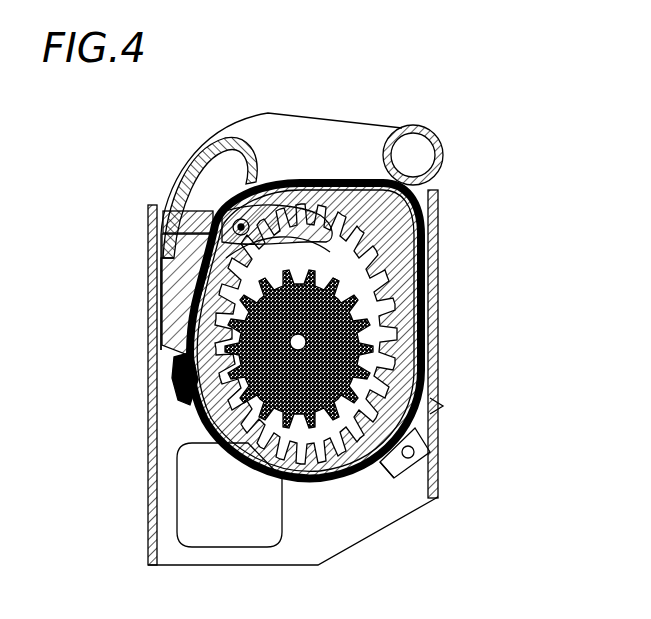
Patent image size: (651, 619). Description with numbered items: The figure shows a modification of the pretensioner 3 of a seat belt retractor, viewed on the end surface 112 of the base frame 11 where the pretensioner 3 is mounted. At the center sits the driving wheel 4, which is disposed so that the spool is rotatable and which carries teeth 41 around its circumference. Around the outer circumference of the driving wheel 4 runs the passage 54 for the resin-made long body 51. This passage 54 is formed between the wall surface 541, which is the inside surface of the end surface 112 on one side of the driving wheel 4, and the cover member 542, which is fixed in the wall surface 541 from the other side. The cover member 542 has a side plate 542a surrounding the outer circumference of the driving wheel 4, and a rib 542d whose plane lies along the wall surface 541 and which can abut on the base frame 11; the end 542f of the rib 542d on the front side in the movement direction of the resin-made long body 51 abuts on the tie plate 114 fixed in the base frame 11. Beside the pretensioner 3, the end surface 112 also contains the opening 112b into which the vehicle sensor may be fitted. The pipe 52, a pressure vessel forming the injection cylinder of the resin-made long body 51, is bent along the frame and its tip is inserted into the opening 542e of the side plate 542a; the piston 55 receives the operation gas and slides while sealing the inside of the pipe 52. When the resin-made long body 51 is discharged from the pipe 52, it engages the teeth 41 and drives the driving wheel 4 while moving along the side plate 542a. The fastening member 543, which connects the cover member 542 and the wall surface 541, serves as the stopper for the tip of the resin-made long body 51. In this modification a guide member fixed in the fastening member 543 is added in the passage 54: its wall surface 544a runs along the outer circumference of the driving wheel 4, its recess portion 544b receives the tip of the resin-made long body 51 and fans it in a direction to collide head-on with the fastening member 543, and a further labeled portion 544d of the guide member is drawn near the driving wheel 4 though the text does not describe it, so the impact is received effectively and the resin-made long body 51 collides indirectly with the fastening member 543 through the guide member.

The pretensioner 3 is at (116, 130).
The driving wheel 4 is at (299, 349).
The base frame 11 is at (146, 401).
The teeth 41 is at (340, 281).
The resin-made long body 51 is at (188, 294).
The pipe 52 is at (310, 118).
The passage 54 is at (432, 332).
The piston 55 is at (197, 210).
The end surface 112 is at (241, 568).
The opening 112b is at (185, 495).
The tie plate 114 is at (440, 456).
The wall surface 541 is at (305, 330).
The cover member 542 is at (296, 484).
The side plate 542a is at (266, 176).
The rib 542d is at (392, 478).
The opening 542e is at (166, 322).
The end 542f is at (442, 407).
The fastening member 543 is at (162, 231).
The wall surface 544a is at (160, 266).
The recess portion 544b is at (208, 215).
The arm segment 544d is at (277, 231).